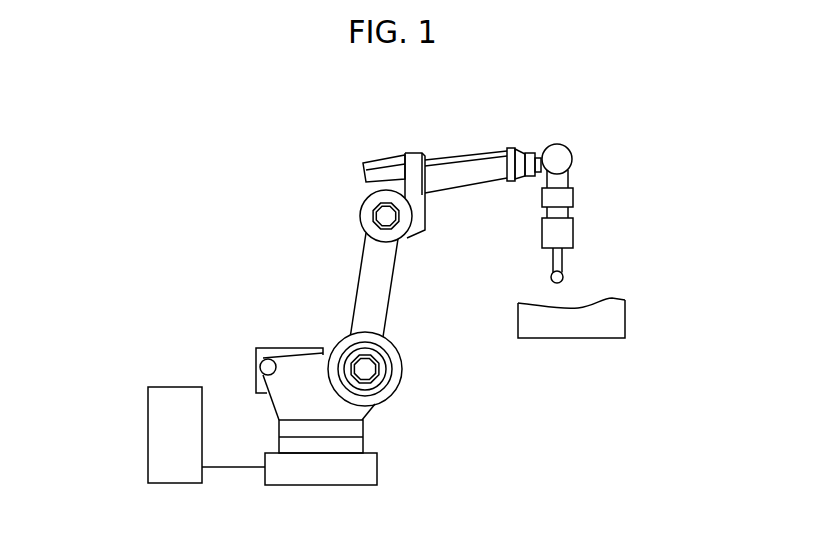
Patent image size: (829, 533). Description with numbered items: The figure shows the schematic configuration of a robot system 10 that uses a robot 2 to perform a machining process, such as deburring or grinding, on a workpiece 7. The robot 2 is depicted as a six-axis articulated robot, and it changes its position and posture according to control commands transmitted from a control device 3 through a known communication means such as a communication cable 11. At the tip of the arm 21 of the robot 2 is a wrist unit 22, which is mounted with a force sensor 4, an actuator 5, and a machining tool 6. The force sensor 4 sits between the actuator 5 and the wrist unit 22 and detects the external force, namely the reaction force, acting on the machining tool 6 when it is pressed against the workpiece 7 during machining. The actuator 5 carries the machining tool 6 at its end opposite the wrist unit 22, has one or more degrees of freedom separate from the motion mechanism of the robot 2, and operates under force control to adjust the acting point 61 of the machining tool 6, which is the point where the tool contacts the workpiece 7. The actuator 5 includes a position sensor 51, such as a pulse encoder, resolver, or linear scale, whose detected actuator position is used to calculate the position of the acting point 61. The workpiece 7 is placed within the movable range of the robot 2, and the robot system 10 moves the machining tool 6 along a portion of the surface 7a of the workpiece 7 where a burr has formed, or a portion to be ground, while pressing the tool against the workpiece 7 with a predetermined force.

The robot system 10 is at (187, 193).
The robot 2 is at (307, 243).
The arm 21 is at (467, 158).
The wrist unit 22 is at (572, 182).
The control device 3 is at (148, 402).
The communication cable 11 is at (235, 465).
The force sensor 4 is at (573, 198).
The position sensor 51 is at (568, 213).
The actuator 5 is at (573, 242).
The machining tool 6 is at (548, 263).
The acting point 61 is at (563, 277).
The workpiece 7 is at (625, 322).
The surface 7a is at (532, 297).